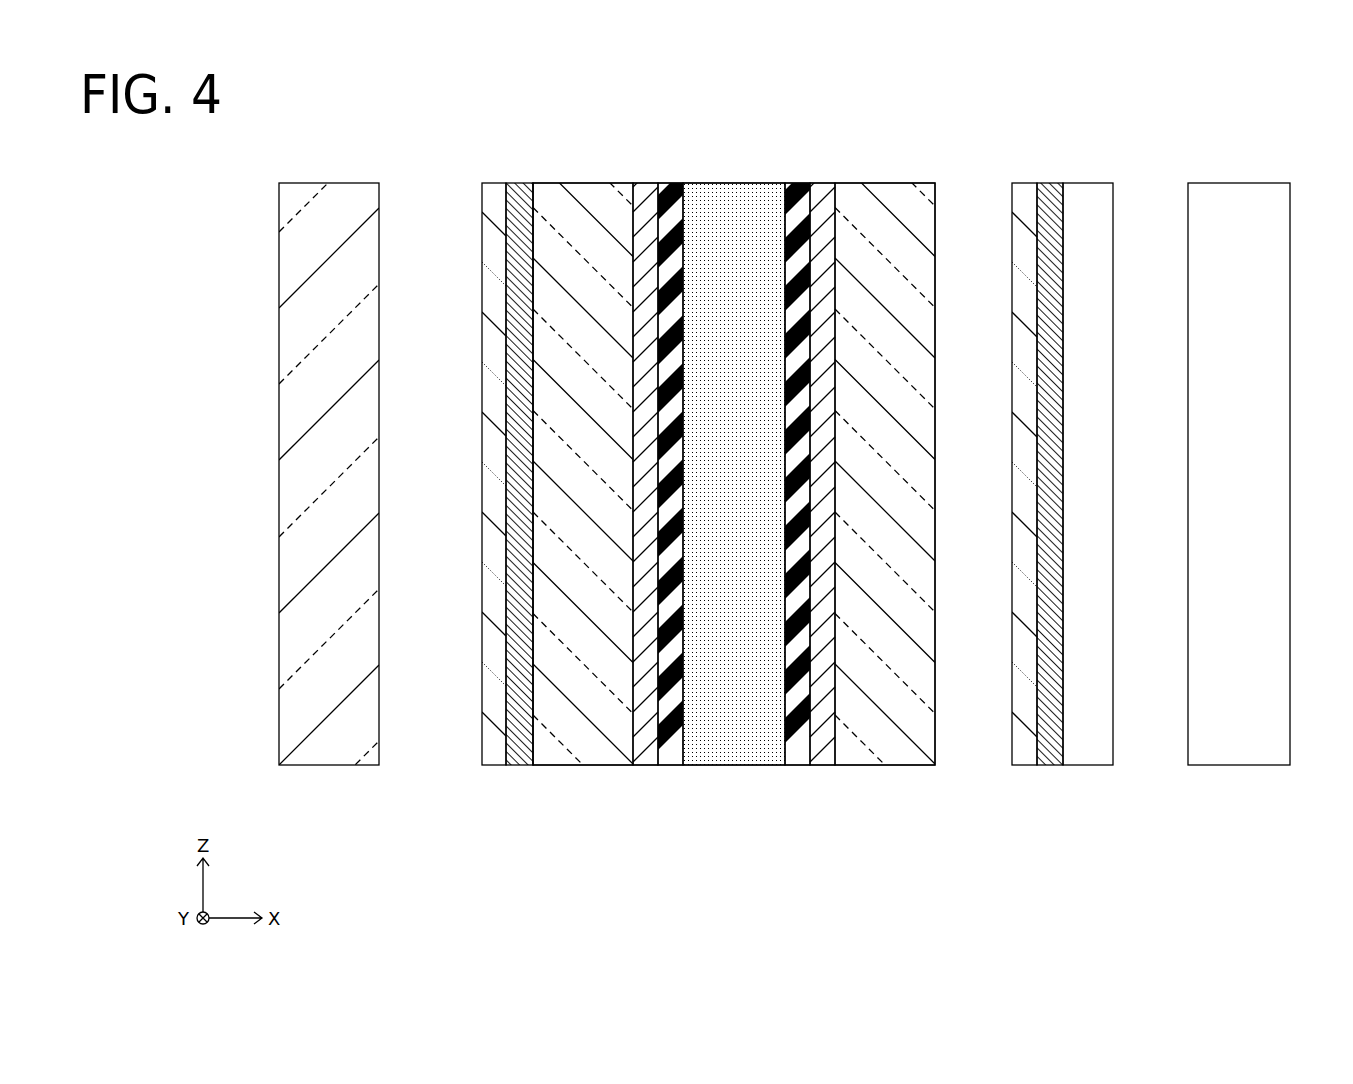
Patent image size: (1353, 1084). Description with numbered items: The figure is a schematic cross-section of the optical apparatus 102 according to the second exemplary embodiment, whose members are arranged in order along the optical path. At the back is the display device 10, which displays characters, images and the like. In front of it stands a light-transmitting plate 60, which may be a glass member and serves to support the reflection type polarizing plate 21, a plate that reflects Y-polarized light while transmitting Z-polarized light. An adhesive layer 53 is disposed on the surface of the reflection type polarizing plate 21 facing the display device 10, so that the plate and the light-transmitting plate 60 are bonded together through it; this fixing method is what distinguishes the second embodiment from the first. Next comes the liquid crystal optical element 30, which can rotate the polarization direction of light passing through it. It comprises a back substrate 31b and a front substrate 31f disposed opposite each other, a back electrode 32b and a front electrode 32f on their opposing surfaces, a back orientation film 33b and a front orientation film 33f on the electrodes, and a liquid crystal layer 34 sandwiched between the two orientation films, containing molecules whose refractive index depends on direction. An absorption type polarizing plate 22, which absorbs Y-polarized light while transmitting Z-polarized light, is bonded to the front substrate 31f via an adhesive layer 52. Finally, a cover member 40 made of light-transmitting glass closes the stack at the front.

The optical apparatus 102 is at (1241, 106).
The cover member 40 is at (330, 183).
The absorption type polarizing plate 22 is at (495, 183).
The adhesive layer 52 is at (522, 183).
The liquid crystal optical element 30 is at (736, 479).
The front substrate 31f is at (583, 765).
The front electrode 32f is at (647, 765).
The front orientation film 33f is at (672, 765).
The liquid crystal layer 34 is at (747, 745).
The back orientation film 33b is at (797, 765).
The back electrode 32b is at (823, 765).
The back substrate 31b is at (880, 765).
The reflection type polarizing plate 21 is at (1025, 183).
The adhesive layer 53 is at (1050, 183).
The light-transmitting plate 60 is at (1087, 183).
The display device 10 is at (1238, 183).